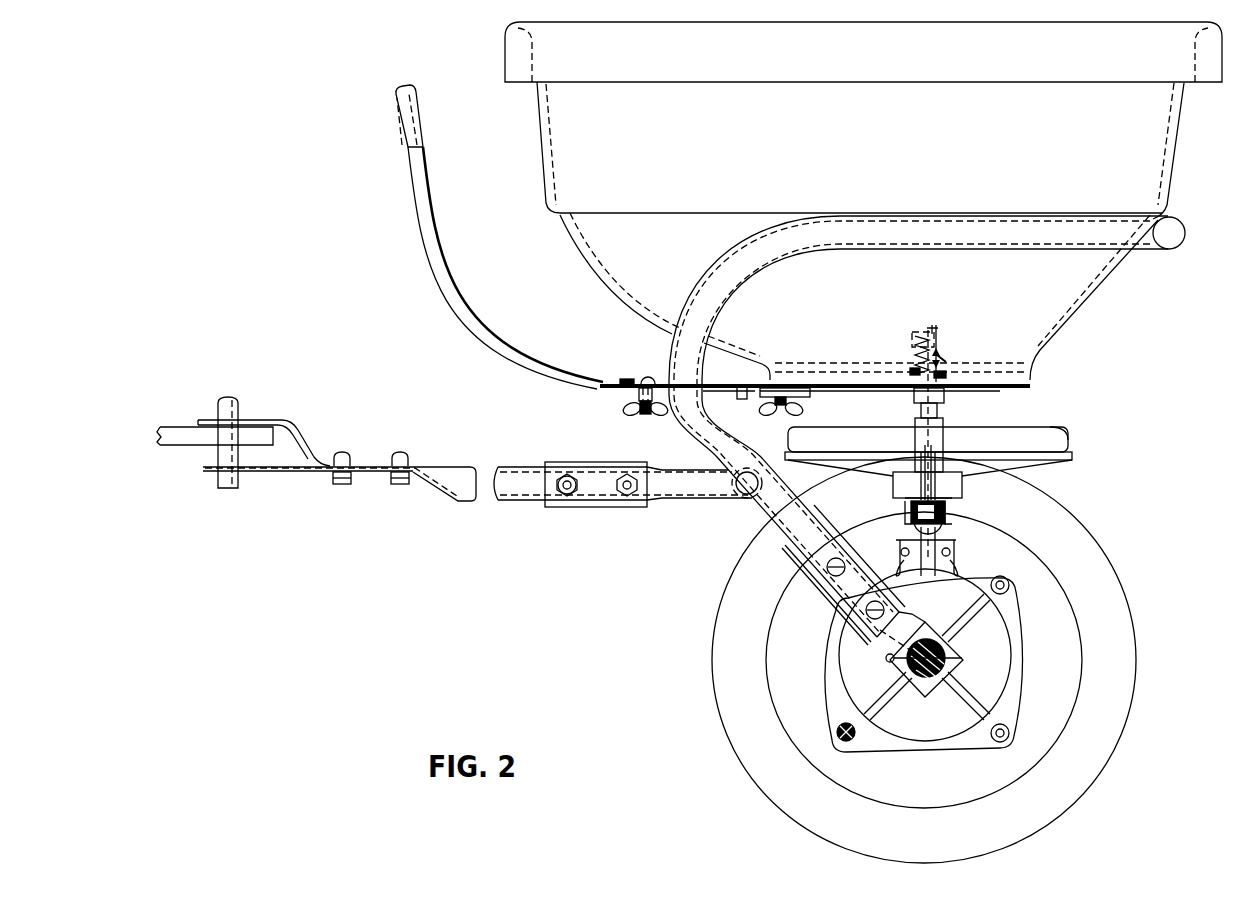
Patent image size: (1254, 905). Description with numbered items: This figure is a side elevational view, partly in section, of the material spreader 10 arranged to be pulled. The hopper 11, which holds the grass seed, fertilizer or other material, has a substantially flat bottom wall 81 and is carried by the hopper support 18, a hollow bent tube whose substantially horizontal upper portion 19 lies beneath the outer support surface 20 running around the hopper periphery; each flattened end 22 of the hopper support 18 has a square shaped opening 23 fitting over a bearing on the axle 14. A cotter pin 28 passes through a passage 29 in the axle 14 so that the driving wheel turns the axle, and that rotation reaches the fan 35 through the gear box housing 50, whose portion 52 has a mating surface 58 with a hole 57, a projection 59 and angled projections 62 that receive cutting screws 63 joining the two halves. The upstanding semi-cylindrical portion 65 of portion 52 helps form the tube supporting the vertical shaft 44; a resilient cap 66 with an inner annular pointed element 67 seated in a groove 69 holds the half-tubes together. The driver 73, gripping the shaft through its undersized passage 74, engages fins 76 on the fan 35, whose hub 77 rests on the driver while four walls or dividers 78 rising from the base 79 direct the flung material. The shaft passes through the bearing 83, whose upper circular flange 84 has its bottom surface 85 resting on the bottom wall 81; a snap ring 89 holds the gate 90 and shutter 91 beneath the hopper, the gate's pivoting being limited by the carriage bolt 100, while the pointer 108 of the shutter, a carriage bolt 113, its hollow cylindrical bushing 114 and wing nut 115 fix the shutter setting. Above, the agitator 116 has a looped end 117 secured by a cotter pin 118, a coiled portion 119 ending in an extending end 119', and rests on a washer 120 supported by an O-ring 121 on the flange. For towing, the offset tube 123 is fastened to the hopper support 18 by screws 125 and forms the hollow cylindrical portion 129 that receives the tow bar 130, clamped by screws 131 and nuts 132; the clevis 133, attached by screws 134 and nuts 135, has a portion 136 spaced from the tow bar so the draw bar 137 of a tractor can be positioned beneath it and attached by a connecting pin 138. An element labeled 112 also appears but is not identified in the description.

The material spreader 10 is at (863, 215).
The hopper 11 is at (863, 215).
The axle 14 is at (900, 666).
The hopper support 18 is at (1186, 244).
The upper portion 19 is at (956, 423).
The outer support surface 20 is at (1184, 227).
The flattened end of hopper support 22 is at (952, 657).
The square shaped opening 23 is at (962, 627).
The cotter pin 28 is at (888, 656).
The passage 29 is at (925, 645).
The fan 35 is at (950, 456).
The vertical shaft 44 is at (910, 445).
The gear box housing 50 is at (924, 660).
The portion of gear box housing 52 is at (937, 677).
The hole 57 is at (899, 552).
The mating surface 58 is at (928, 566).
The projection 59 is at (951, 553).
The angled projections 62 is at (1000, 742).
The cutting screws 63 is at (857, 742).
The upstanding hollow semi-cylindrical portion 65 is at (903, 530).
The cap 66 is at (940, 523).
The inner annular pointed element 67 is at (942, 530).
The groove 69 is at (963, 510).
The driver 73 is at (964, 494).
The passage 74 is at (912, 504).
The fins 76 is at (872, 480).
The hub 77 is at (914, 428).
The walls or dividers 78 is at (1050, 427).
The base or bottom wall 79 is at (1050, 452).
The bottom wall 81 is at (1029, 386).
The bearing 83 is at (912, 396).
The upper circular flange 84 is at (815, 405).
The bottom surface 85 is at (957, 392).
The snap ring 89 is at (938, 405).
The gate 90 is at (743, 382).
The shutter 91 is at (746, 401).
The carriage bolt 100 is at (776, 382).
The pointer 108 is at (629, 380).
The handle 112 is at (452, 259).
The carriage bolt 113 is at (655, 378).
The hollow cylindrical bushing 114 is at (629, 420).
The wing nut 115 is at (660, 417).
The agitator 116 is at (924, 342).
The end of agitator 117 is at (940, 333).
The cotter pin 118 is at (940, 325).
The coiled portion 119 is at (959, 352).
The extending end 119' is at (909, 354).
The washer 120 is at (915, 366).
The O-ring 121 is at (918, 372).
The offset tube 123 is at (732, 502).
The screws 125 is at (826, 585).
The hollow cylindrical portion 129 is at (597, 487).
The tow bar 130 is at (477, 480).
The screws 131 is at (581, 487).
The nuts 132 is at (565, 476).
The clevis 133 is at (276, 445).
The screws 134 is at (371, 470).
The nuts 135 is at (351, 481).
The portion of clevis 136 is at (214, 410).
The draw bar 137 is at (180, 448).
The connecting pin 138 is at (210, 468).